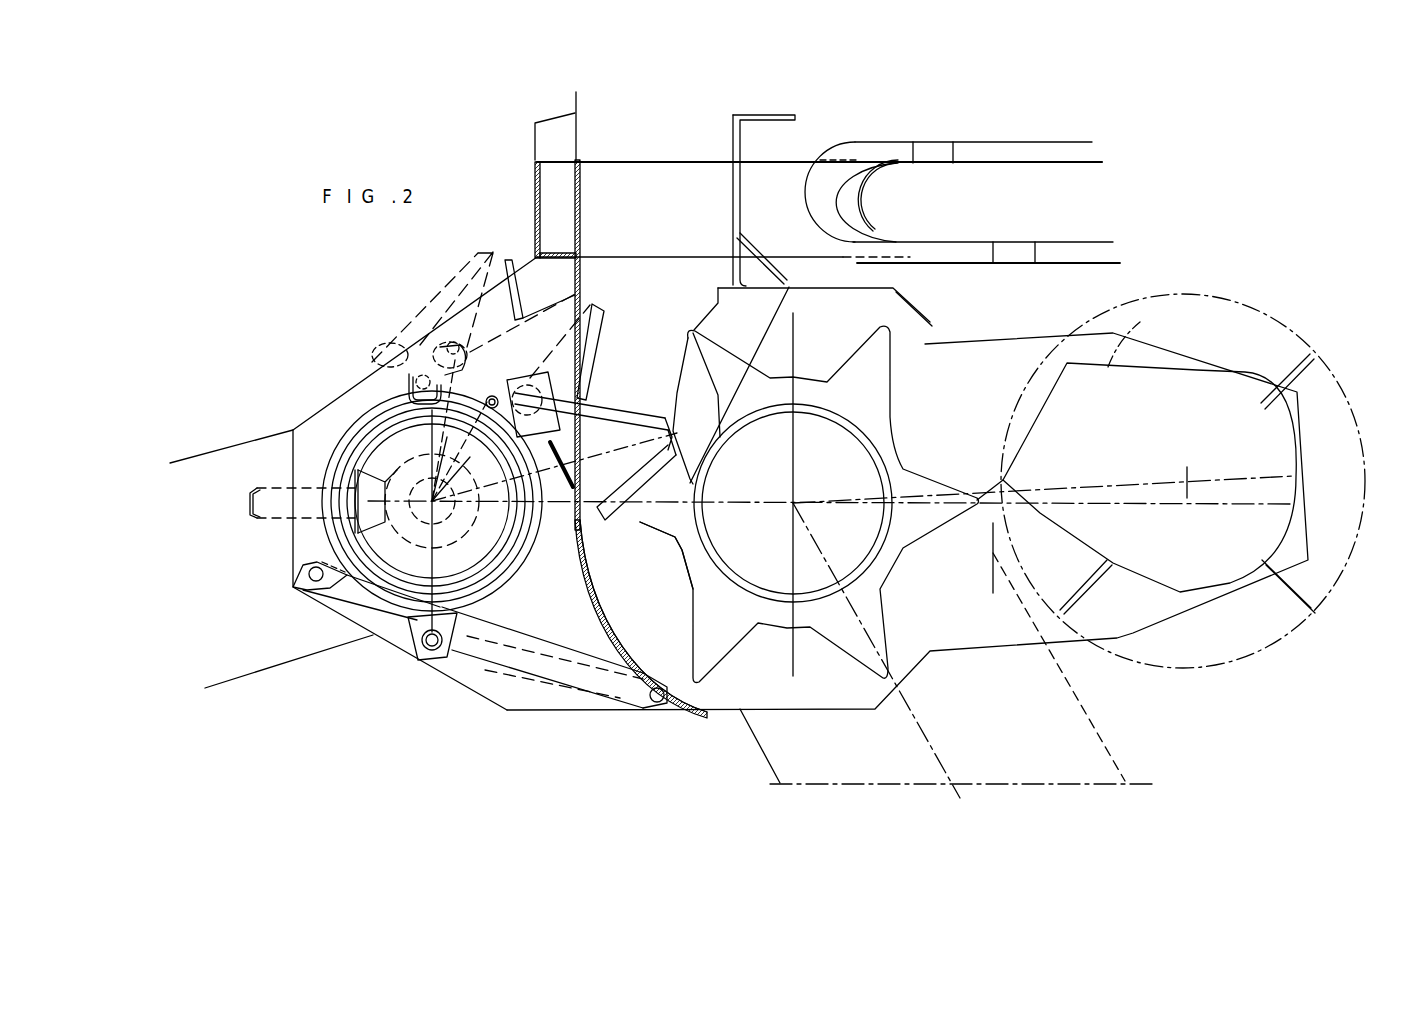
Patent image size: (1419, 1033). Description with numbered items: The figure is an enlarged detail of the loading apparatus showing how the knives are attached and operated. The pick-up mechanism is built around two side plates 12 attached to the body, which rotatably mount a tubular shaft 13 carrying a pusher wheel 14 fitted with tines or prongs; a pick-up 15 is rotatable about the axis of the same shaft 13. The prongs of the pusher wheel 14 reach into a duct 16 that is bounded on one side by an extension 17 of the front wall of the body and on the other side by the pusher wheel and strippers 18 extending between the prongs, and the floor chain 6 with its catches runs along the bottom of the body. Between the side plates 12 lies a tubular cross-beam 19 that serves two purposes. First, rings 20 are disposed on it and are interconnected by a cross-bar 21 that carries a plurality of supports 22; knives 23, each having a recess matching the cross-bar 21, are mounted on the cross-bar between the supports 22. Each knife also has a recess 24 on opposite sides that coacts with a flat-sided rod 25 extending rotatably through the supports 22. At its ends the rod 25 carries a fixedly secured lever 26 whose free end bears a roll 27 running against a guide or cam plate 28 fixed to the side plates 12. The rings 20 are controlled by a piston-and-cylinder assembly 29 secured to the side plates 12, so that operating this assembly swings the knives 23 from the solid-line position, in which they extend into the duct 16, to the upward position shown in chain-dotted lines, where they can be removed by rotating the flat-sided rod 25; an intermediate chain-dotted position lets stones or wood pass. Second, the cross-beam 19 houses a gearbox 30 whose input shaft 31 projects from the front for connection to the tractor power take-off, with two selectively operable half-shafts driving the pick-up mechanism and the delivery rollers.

The floor chain 6 is at (860, 153).
The side plates 12 is at (480, 673).
The tubular shaft 13 is at (857, 457).
The pusher wheel 14 is at (735, 655).
The pick-up 15 is at (1070, 633).
The duct 16 is at (617, 590).
The extension 17 is at (593, 590).
The strippers 18 is at (765, 313).
The tubular cross-beam 19 is at (360, 433).
The rings 20 is at (342, 452).
The cross-bar 21 is at (588, 522).
The supports 22 is at (578, 367).
The knives 23 is at (635, 430).
The recess 24 is at (573, 540).
The rod 25 is at (557, 387).
The lever 26 is at (497, 390).
The roll 27 is at (473, 392).
The cam plate 28 is at (390, 410).
The piston-and-cylinder assembly 29 is at (613, 690).
The gearbox 30 is at (410, 577).
The input shaft 31 is at (283, 508).